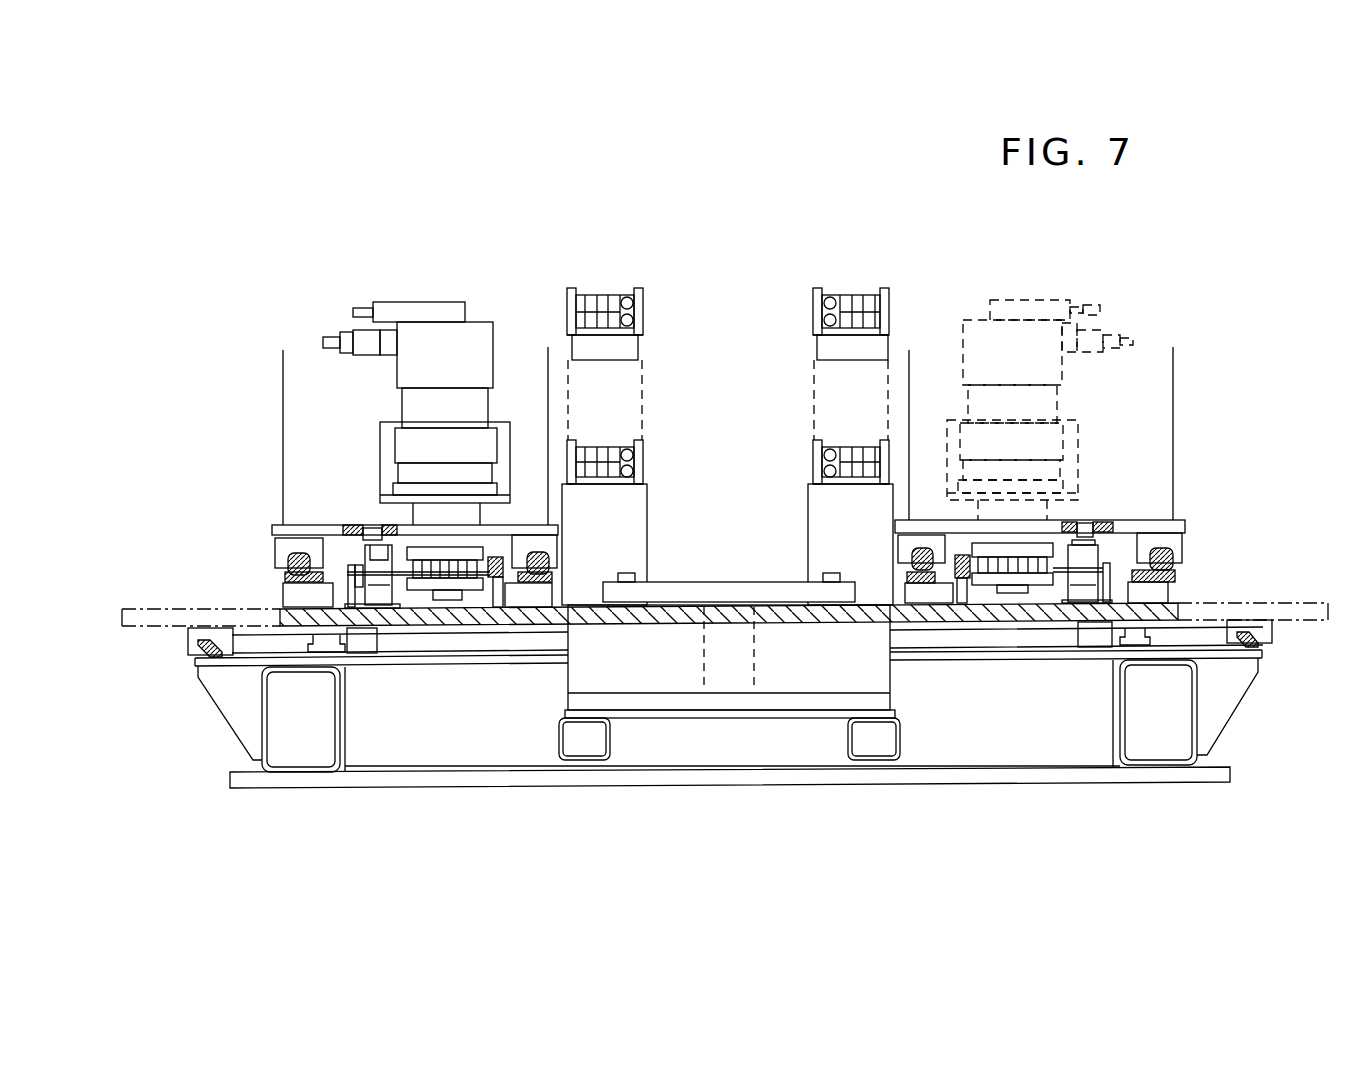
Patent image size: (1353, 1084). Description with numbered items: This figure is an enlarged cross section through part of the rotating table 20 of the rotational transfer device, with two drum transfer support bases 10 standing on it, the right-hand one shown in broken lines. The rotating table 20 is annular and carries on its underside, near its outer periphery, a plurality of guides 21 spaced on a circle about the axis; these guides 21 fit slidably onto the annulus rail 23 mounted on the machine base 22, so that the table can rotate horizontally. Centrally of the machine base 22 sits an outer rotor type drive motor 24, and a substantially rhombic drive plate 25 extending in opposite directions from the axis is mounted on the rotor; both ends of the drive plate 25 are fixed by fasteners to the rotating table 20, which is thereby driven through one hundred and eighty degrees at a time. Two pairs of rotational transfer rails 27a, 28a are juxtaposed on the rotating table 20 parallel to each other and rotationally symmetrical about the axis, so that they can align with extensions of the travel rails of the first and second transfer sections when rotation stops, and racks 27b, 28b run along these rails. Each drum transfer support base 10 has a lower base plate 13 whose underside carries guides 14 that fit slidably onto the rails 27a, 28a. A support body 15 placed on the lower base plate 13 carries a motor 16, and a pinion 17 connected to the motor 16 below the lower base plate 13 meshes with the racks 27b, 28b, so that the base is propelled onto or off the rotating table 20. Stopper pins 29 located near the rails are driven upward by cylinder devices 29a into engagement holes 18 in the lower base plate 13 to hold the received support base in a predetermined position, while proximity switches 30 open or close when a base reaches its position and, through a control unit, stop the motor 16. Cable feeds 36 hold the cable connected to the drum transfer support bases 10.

The drum transfer support base 10 is at (270, 385).
The lower base plate 13 is at (272, 530).
The guide 14 is at (280, 550).
The support body 15 is at (303, 417).
The motor 16 is at (442, 365).
The pinion 17 is at (432, 582).
The engagement hole 18 is at (352, 565).
The rotating table 20 is at (1178, 603).
The guide 21 is at (192, 641).
The machine base 22 is at (308, 672).
The annulus rail 23 is at (1252, 658).
The drive motor 24 is at (800, 652).
The drive plate 25 is at (727, 593).
The rotational transfer rail 27a is at (287, 573).
The rack 27b is at (492, 580).
The rotational transfer rail 28a is at (1165, 550).
The rack 28b is at (962, 565).
The stopper pin 29 is at (370, 525).
The cylinder device 29a is at (384, 592).
The proximity switch 30 is at (343, 527).
The cable feed 36 is at (615, 302).